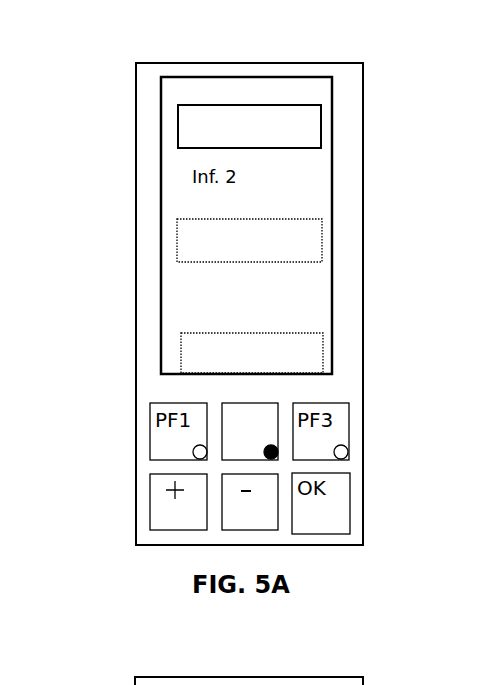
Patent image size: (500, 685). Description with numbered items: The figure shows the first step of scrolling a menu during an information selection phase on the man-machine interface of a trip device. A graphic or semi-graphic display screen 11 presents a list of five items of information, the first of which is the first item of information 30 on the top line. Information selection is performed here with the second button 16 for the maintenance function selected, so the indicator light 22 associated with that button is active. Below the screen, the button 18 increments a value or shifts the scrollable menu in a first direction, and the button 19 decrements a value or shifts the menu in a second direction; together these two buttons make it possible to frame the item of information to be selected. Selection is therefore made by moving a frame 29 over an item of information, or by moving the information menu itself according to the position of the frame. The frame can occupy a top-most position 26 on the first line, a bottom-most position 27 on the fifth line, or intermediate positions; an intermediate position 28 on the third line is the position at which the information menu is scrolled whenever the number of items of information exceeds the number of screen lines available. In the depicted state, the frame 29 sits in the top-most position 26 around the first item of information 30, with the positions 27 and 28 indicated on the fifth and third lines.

The display screen 11 is at (335, 204).
The second button 16 is at (222, 442).
The incrementing button 18 is at (190, 512).
The decrementing button 19 is at (255, 520).
The indicator light 22 is at (275, 457).
The top-most position 26 is at (173, 125).
The bottom-most position 27 is at (175, 354).
The intermediate position 28 is at (203, 276).
The frame 29 is at (321, 130).
The first item of information 30 is at (238, 127).